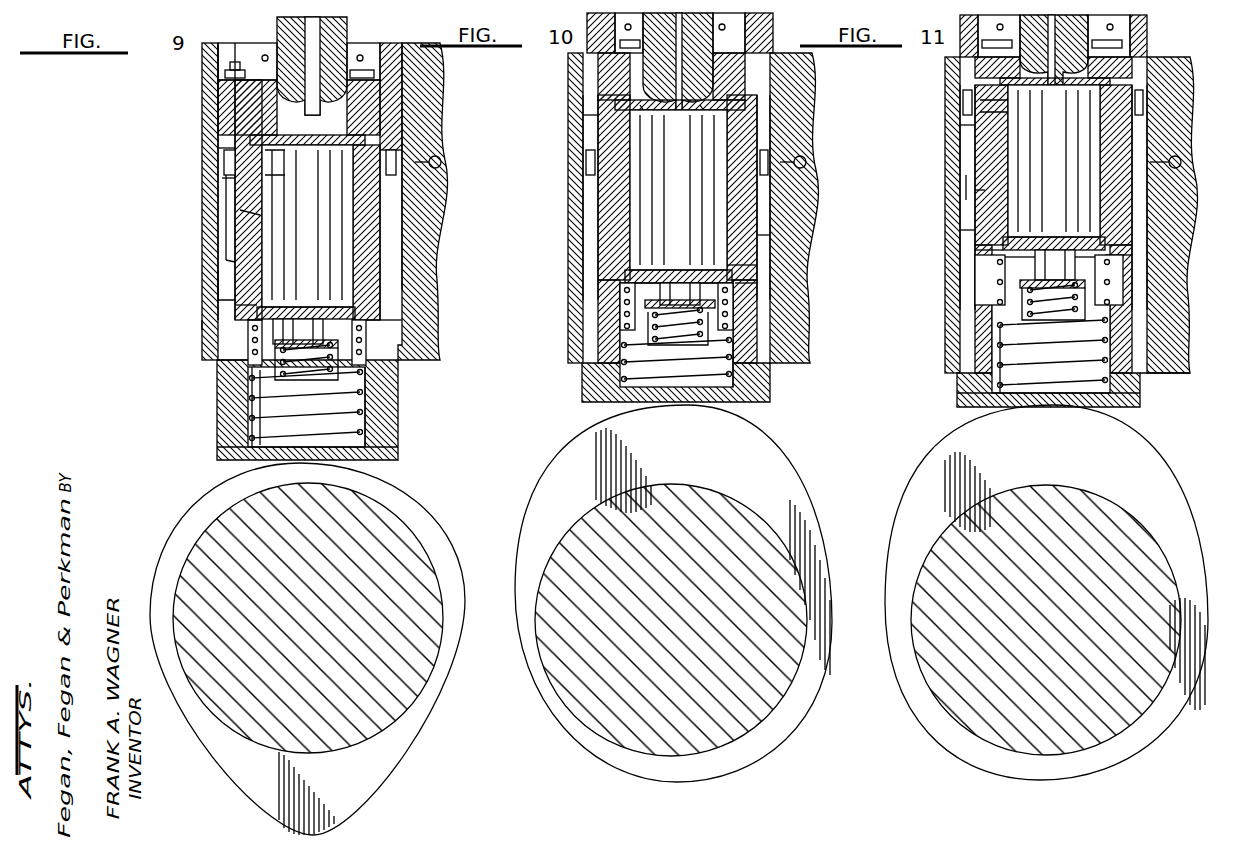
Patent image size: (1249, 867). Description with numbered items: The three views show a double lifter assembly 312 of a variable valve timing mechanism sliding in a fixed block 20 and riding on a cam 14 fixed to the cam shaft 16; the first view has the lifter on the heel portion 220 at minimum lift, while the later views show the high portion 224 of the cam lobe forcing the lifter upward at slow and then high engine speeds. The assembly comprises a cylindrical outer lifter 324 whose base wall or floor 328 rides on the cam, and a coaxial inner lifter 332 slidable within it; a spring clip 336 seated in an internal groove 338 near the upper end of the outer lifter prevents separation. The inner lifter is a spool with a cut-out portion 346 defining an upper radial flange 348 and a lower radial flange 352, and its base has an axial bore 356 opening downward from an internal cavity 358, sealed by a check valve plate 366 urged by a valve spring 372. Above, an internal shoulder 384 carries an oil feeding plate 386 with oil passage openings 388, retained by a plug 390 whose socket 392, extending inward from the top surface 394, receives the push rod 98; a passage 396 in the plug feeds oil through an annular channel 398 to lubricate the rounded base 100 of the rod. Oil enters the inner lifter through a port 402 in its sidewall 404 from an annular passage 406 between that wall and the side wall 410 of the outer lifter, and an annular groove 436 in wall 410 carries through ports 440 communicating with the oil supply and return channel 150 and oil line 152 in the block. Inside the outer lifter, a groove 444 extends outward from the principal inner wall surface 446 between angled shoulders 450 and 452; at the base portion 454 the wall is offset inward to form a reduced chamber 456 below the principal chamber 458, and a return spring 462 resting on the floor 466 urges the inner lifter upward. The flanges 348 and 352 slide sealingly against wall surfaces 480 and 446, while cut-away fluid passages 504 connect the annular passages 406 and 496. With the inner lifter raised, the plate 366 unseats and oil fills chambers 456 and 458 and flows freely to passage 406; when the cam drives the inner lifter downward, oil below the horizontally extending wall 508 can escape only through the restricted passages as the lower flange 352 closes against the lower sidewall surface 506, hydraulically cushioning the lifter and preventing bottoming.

In FIG. 9, the cam 14 is at (318, 649).
In FIG. 10, the cam 14 is at (673, 605).
In FIG. 11, the cam 14 is at (1046, 603).
In FIG. 9, the cam shaft 16 is at (410, 680).
In FIG. 10, the cam shaft 16 is at (660, 733).
In FIG. 11, the cam shaft 16 is at (1010, 728).
In FIG. 9, the fixed body or block 20 is at (415, 190).
In FIG. 10, the fixed body or block 20 is at (775, 335).
In FIG. 11, the fixed body or block 20 is at (1175, 210).
In FIG. 9, the push rod 98 is at (335, 38).
In FIG. 10, the push rod 98 is at (695, 42).
In FIG. 11, the push rod 98 is at (1092, 42).
In FIG. 9, the rounded base 100 is at (288, 80).
In FIG. 10, the rounded base 100 is at (612, 68).
In FIG. 11, the rounded base 100 is at (1055, 27).
In FIG. 9, the oil supply and return channel 150 is at (418, 160).
In FIG. 10, the oil supply and return channel 150 is at (782, 160).
In FIG. 11, the oil supply and return channel 150 is at (1185, 160).
In FIG. 9, the oil line 152 is at (441, 162).
In FIG. 10, the oil line 152 is at (806, 162).
In FIG. 11, the oil line 152 is at (1181, 162).
In FIG. 9, the heel portion 220 is at (408, 511).
In FIG. 10, the high portion 224 is at (733, 455).
In FIG. 11, the high portion 224 is at (1095, 457).
In FIG. 9, the double lifter assembly 312 is at (200, 327).
In FIG. 9, the outer lifter 324 is at (395, 215).
In FIG. 9, the base wall or floor 328 is at (383, 462).
In FIG. 9, the inner lifter 332 is at (226, 272).
In FIG. 9, the spring clip 336 is at (405, 62).
In FIG. 11, the spring clip 336 is at (1142, 35).
In FIG. 9, the internal groove or recess 338 is at (395, 92).
In FIG. 11, the internal groove or recess 338 is at (1147, 48).
In FIG. 9, the annular grooved or cut-out portion 346 is at (240, 295).
In FIG. 10, the annular grooved or cut-out portion 346 is at (752, 242).
In FIG. 11, the annular grooved or cut-out portion 346 is at (975, 230).
In FIG. 10, the upper radial flange 348 is at (760, 70).
In FIG. 9, the lower radial flange 352 is at (258, 332).
In FIG. 10, the lower radial flange 352 is at (737, 280).
In FIG. 11, the lower radial flange 352 is at (990, 275).
In FIG. 9, the axial bore 356 is at (268, 375).
In FIG. 10, the axial bore 356 is at (625, 280).
In FIG. 11, the axial bore 356 is at (1012, 242).
In FIG. 9, the chamber or internal cavity 358 is at (252, 305).
In FIG. 11, the chamber or internal cavity 358 is at (990, 250).
In FIG. 9, the plate 366 is at (258, 418).
In FIG. 10, the plate 366 is at (648, 340).
In FIG. 11, the plate 366 is at (995, 350).
In FIG. 9, the valve spring 372 is at (340, 382).
In FIG. 10, the valve spring 372 is at (680, 304).
In FIG. 11, the valve spring 372 is at (1086, 315).
In FIG. 9, the internal shoulder 384 is at (224, 170).
In FIG. 9, the oil feeding plate 386 is at (224, 150).
In FIG. 10, the oil feeding plate 386 is at (597, 95).
In FIG. 11, the oil feeding plate 386 is at (965, 85).
In FIG. 9, the oil passage openings 388 is at (307, 226).
In FIG. 10, the oil passage openings 388 is at (678, 190).
In FIG. 11, the oil passage openings 388 is at (1054, 161).
In FIG. 9, the plug or block 390 is at (226, 117).
In FIG. 11, the plug or block 390 is at (975, 60).
In FIG. 9, the socket 392 is at (281, 162).
In FIG. 9, the top surface 394 is at (206, 78).
In FIG. 10, the top surface 394 is at (600, 56).
In FIG. 9, the passage 396 is at (372, 112).
In FIG. 10, the passage 396 is at (680, 123).
In FIG. 11, the passage 396 is at (1135, 80).
In FIG. 9, the annular channel 398 is at (372, 130).
In FIG. 10, the annular channel 398 is at (722, 110).
In FIG. 11, the annular channel 398 is at (1112, 96).
In FIG. 9, the port 402 is at (226, 205).
In FIG. 9, the sidewall 404 is at (236, 245).
In FIG. 11, the sidewall 404 is at (985, 190).
In FIG. 9, the annular passage 406 is at (232, 182).
In FIG. 11, the annular passage 406 is at (963, 105).
In FIG. 9, the side wall 410 is at (245, 222).
In FIG. 11, the side wall 410 is at (965, 175).
In FIG. 9, the annular groove 436 is at (400, 225).
In FIG. 10, the annular groove 436 is at (580, 165).
In FIG. 11, the annular groove 436 is at (965, 160).
In FIG. 10, the through ports 440 is at (600, 115).
In FIG. 11, the through ports 440 is at (970, 125).
In FIG. 9, the annular groove 444 is at (390, 286).
In FIG. 9, the principal inner wall surface 446 is at (228, 100).
In FIG. 9, the angled shoulder 450 is at (395, 272).
In FIG. 10, the angled shoulder 450 is at (772, 222).
In FIG. 9, the angled shoulder 452 is at (385, 318).
In FIG. 10, the angled shoulder 452 is at (742, 265).
In FIG. 11, the angled shoulder 452 is at (1140, 255).
In FIG. 9, the base portion 454 is at (340, 388).
In FIG. 11, the base portion 454 is at (1175, 345).
In FIG. 9, the cavity or chamber 456 is at (250, 440).
In FIG. 10, the cavity or chamber 456 is at (732, 360).
In FIG. 9, the principal chamber 458 is at (334, 372).
In FIG. 10, the principal chamber 458 is at (650, 327).
In FIG. 11, the principal chamber 458 is at (1080, 305).
In FIG. 9, the spring 462 is at (366, 418).
In FIG. 11, the spring 462 is at (1130, 400).
In FIG. 9, the floor 466 is at (250, 445).
In FIG. 10, the floor 466 is at (620, 390).
In FIG. 11, the floor 466 is at (995, 395).
In FIG. 9, the inner principal wall surface 480 is at (366, 340).
In FIG. 10, the inner principal wall surface 480 is at (757, 90).
In FIG. 11, the inner principal wall surface 480 is at (1125, 275).
In FIG. 9, the annular passage 496 is at (385, 300).
In FIG. 10, the annular passage 496 is at (586, 250).
In FIG. 9, the fluid passages 504 is at (393, 242).
In FIG. 10, the fluid passages 504 is at (590, 210).
In FIG. 11, the fluid passages 504 is at (1165, 235).
In FIG. 10, the lower sidewall surface 506 is at (735, 300).
In FIG. 9, the horizontally extending wall 508 is at (243, 360).
In FIG. 10, the horizontally extending wall 508 is at (618, 300).
In FIG. 11, the horizontally extending wall 508 is at (985, 305).